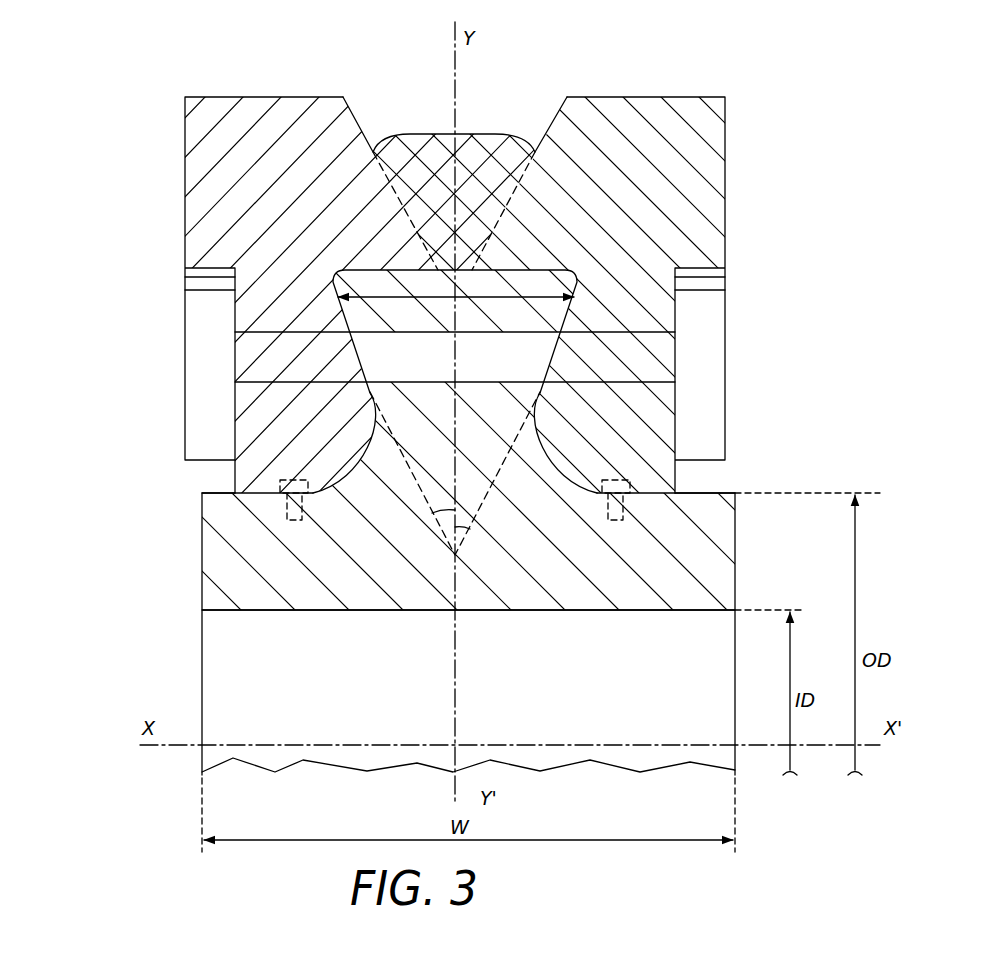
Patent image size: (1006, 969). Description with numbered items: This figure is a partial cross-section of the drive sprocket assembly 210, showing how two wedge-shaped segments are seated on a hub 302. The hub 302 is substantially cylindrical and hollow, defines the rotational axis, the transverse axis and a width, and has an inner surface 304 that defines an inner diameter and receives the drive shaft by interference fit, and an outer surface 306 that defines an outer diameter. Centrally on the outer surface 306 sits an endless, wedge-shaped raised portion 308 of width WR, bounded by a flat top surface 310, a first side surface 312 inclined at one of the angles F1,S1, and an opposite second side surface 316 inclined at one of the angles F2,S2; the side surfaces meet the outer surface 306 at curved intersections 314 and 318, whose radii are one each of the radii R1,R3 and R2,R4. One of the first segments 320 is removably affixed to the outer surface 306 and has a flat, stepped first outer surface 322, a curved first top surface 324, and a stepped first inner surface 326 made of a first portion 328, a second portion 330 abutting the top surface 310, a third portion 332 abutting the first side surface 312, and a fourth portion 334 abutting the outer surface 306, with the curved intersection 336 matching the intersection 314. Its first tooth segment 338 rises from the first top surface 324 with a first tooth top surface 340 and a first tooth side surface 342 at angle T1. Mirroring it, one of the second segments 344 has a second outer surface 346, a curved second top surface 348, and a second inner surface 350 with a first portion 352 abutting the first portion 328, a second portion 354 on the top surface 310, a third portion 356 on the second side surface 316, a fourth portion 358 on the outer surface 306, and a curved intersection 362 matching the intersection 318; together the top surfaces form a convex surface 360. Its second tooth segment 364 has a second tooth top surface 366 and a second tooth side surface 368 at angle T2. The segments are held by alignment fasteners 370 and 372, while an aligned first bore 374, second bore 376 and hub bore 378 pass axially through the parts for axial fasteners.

The drive sprocket assembly 210 is at (902, 99).
The hub 302 is at (222, 572).
The inner surface 304 is at (275, 612).
The outer surface 306 is at (230, 493).
The raised portion 308 is at (660, 303).
The top surface 310 is at (468, 176).
The first side surface 312 is at (690, 282).
The intersection 314 is at (545, 405).
The second side surface 316 is at (330, 295).
The intersection 318 is at (355, 464).
The first segments 320 is at (727, 170).
The first outer surface 322 is at (727, 207).
The first top surface 324 is at (482, 133).
The first inner surface 326 is at (580, 95).
The first portion 328 is at (515, 152).
The second portion 330 is at (553, 266).
The third portion 332 is at (685, 386).
The fourth portion 334 is at (660, 491).
The intersection 336 is at (556, 464).
The first tooth segment 338 is at (724, 94).
The first tooth top surface 340 is at (686, 97).
The first tooth side surface 342 is at (530, 268).
The second segments 344 is at (185, 200).
The second outer surface 346 is at (200, 200).
The second top surface 348 is at (412, 133).
The second inner surface 350 is at (400, 150).
The first portion 352 is at (452, 177).
The second portion 354 is at (430, 232).
The third portion 356 is at (368, 392).
The fourth portion 358 is at (247, 490).
The convex surface 360 is at (468, 130).
The intersection 362 is at (338, 388).
The second tooth segment 364 is at (343, 94).
The second tooth top surface 366 is at (236, 97).
The second tooth side surface 368 is at (365, 112).
The first set of alignment fasteners 370 is at (628, 508).
The second set of alignment fasteners 372 is at (285, 508).
The first bore 374 is at (615, 362).
The second bore 376 is at (328, 355).
The hub bore 378 is at (528, 357).
The angle T1 is at (540, 268).
The angle T2 is at (410, 190).
The width WR is at (456, 285).
The radii of curvature R1, R3 R1,R3 is at (572, 487).
The radii of curvature R2, R4 R2,R4 is at (340, 487).
The angles F1, S1 F1,S1 is at (470, 527).
The angles F2, S2 F2,S2 is at (453, 508).